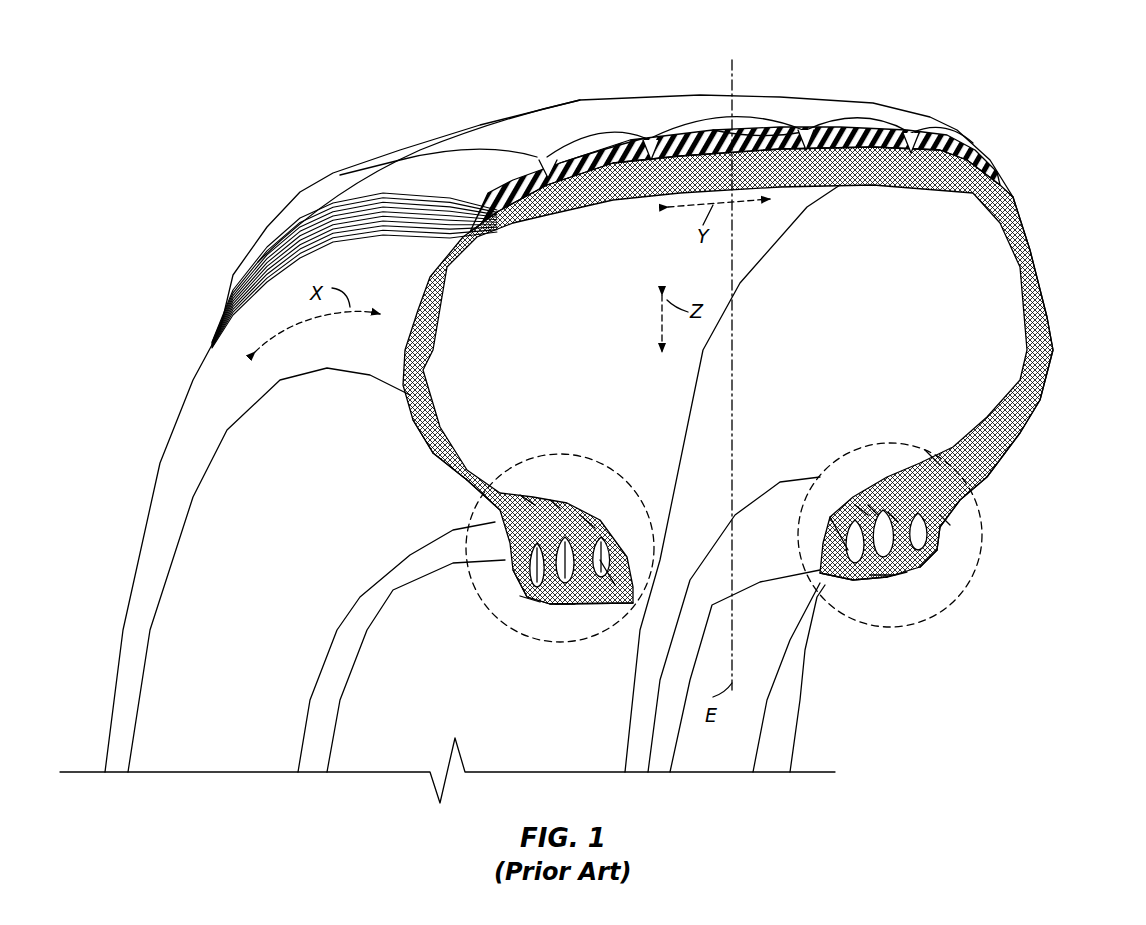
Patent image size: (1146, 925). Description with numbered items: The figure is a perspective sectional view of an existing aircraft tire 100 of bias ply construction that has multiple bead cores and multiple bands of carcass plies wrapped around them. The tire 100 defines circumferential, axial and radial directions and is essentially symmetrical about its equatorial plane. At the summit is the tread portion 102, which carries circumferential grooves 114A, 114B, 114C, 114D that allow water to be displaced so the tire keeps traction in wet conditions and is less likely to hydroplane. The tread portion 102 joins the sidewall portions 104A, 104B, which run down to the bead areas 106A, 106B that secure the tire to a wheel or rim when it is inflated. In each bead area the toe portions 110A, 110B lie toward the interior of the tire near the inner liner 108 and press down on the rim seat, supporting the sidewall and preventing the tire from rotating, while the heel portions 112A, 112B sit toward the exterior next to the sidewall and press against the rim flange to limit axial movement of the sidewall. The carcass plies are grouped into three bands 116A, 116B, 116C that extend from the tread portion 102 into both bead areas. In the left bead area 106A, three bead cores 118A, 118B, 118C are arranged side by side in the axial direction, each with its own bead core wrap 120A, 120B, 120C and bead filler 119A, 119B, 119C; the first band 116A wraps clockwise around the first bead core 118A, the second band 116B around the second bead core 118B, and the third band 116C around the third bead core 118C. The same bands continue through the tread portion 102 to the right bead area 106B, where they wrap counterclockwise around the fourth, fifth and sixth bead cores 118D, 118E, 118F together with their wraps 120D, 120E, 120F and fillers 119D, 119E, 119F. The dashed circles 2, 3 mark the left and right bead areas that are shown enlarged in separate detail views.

The aircraft tire 100 is at (116, 90).
The tread portion 102 is at (726, 93).
The first sidewall portion 104A is at (360, 353).
The second sidewall portion 104B is at (1040, 240).
The left bead area 106A is at (510, 567).
The right bead area 106B is at (937, 537).
The inner liner 108 is at (600, 308).
The toe portion 110A is at (603, 617).
The toe portion 110B is at (820, 583).
The heel portion 112A is at (527, 603).
The heel portion 112B is at (933, 557).
The circumferential groove 114A is at (540, 160).
The circumferential groove 114B is at (647, 140).
The circumferential groove 114C is at (803, 130).
The circumferential groove 114D is at (909, 133).
The first band of carcass plies 116A is at (517, 503).
The second band of carcass plies 116B is at (587, 497).
The third band of carcass plies 116C is at (617, 503).
The first bead core 118A is at (470, 527).
The second bead core 118B is at (523, 600).
The third bead core 118C is at (603, 570).
The fourth bead core 118D is at (897, 600).
The fifth bead core 118E is at (883, 563).
The sixth bead core 118F is at (843, 550).
The bead filler 119A is at (440, 498).
The bead filler 119B is at (530, 500).
The bead filler 119C is at (563, 607).
The bead filler 119D is at (952, 520).
The bead filler 119E is at (927, 567).
The bead filler 119F is at (873, 510).
The bead core wrap 120A is at (427, 470).
The bead core wrap 120B is at (557, 503).
The bead core wrap 120C is at (587, 523).
The bead core wrap 120D is at (933, 457).
The bead core wrap 120E is at (893, 517).
The bead core wrap 120F is at (863, 510).
The detail view of left bead area 2 is at (470, 540).
The detail view of right bead area 3 is at (850, 623).